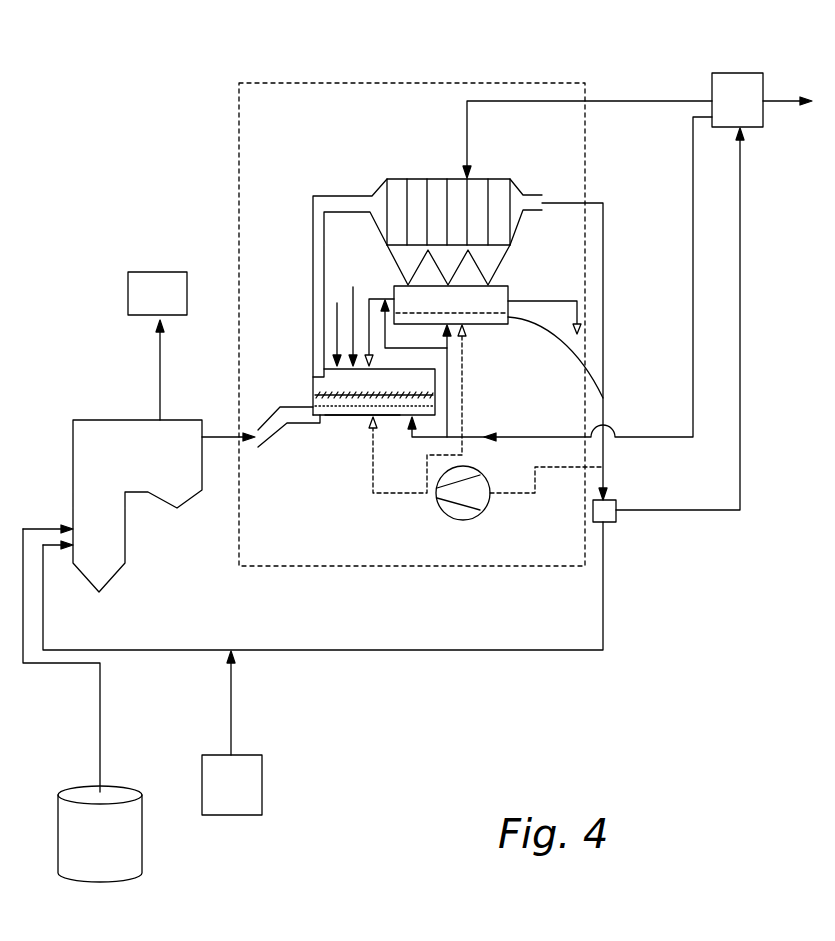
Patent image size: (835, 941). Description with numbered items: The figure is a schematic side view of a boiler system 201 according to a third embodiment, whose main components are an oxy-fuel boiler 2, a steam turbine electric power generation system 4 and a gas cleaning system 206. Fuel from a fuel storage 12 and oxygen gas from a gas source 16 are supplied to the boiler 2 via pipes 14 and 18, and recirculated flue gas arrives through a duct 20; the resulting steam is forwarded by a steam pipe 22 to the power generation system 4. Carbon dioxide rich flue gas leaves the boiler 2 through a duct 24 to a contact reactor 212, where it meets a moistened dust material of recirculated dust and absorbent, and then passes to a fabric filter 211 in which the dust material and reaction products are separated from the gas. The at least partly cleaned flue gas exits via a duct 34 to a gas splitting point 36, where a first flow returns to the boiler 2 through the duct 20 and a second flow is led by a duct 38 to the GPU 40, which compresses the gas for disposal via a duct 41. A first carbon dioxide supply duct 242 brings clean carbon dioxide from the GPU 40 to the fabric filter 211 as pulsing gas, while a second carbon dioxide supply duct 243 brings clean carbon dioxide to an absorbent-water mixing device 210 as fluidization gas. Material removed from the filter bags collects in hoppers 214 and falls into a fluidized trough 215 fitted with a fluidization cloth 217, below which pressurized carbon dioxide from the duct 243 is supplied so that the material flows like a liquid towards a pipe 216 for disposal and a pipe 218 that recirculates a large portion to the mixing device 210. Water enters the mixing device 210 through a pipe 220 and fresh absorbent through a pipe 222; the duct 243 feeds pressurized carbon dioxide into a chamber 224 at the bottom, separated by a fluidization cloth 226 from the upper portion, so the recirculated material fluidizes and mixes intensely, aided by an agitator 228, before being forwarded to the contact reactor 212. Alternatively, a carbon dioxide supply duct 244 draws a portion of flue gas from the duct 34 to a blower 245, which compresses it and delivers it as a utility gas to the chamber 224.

The boiler 2 is at (87, 493).
The steam turbine electric power generation system 4 is at (128, 293).
The fuel storage 12 is at (132, 843).
The pipe 14 is at (99, 688).
The gas source 16 is at (252, 787).
The pipe 18 is at (233, 703).
The duct 20 is at (417, 650).
The steam pipe 22 is at (159, 373).
The duct 24 is at (230, 435).
The duct 34 is at (603, 360).
The gas splitting point 36 is at (592, 507).
The duct 38 is at (740, 320).
The GPU 40 is at (712, 92).
The duct 41 is at (790, 98).
The boiler system 201 is at (86, 157).
The gas cleaning system 206 is at (404, 75).
The absorbent-water mixing device 210 is at (435, 385).
The fabric filter 211 is at (415, 178).
The contact reactor 212 is at (317, 295).
The hoppers 214 is at (392, 262).
The fluidized trough 215 is at (603, 393).
The pipe 216 is at (578, 300).
The fluidization cloth 217 is at (483, 316).
The pipe 218 is at (369, 322).
The pipe 220 is at (353, 290).
The pipe 222 is at (337, 315).
The chamber 224 is at (355, 417).
The fluidization cloth 226 is at (393, 417).
The agitator 228 is at (435, 400).
The first carbon dioxide supply duct 242 is at (539, 100).
The second carbon dioxide supply duct 243 is at (693, 187).
The carbon dioxide supply duct 244 is at (517, 495).
The blower 245 is at (450, 518).